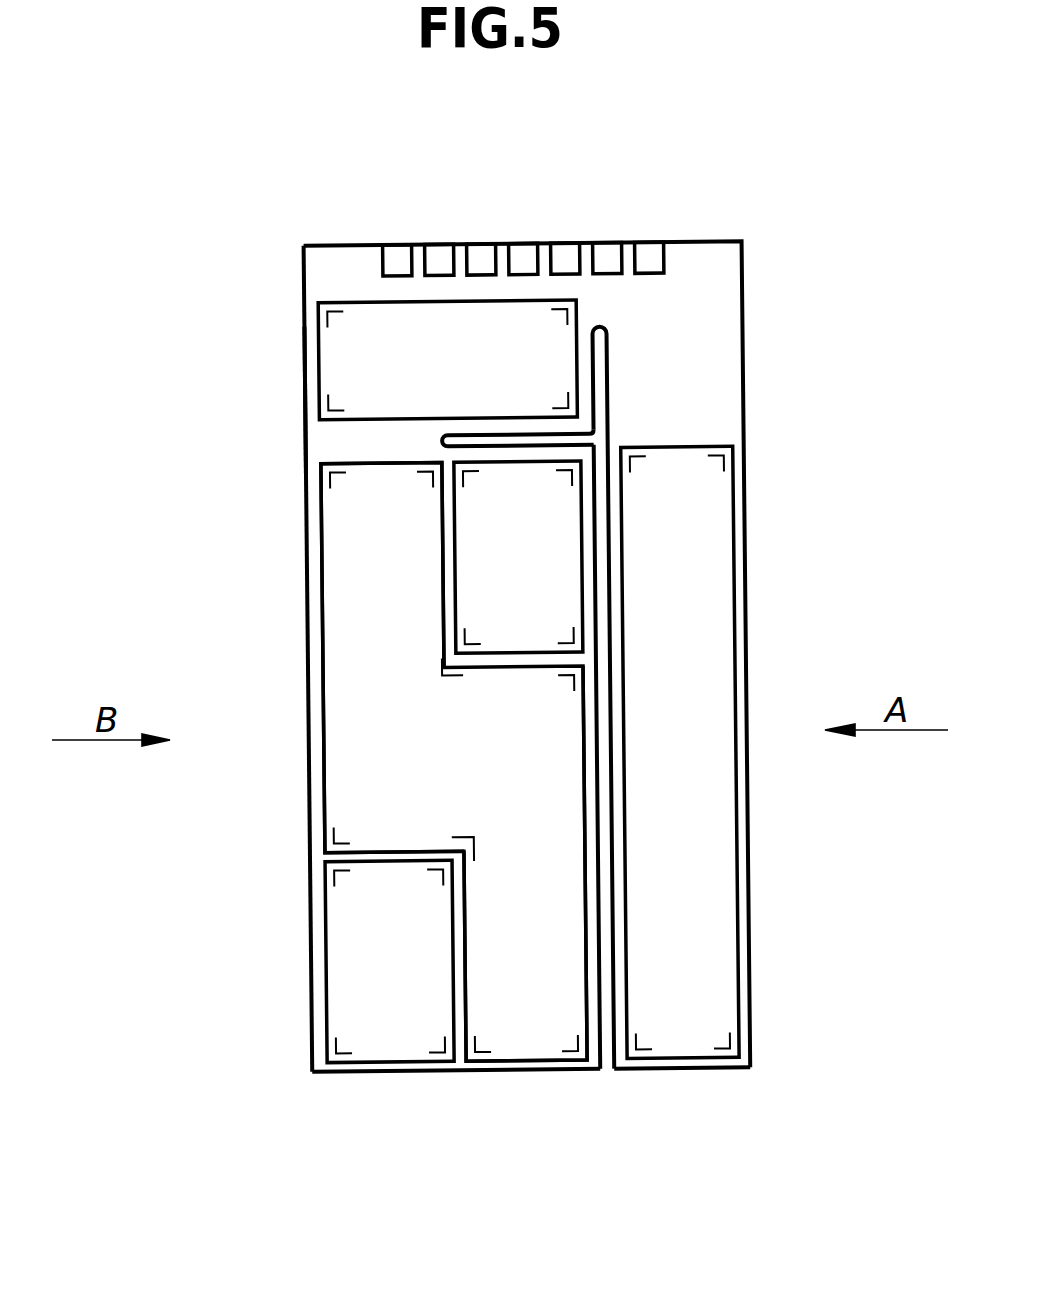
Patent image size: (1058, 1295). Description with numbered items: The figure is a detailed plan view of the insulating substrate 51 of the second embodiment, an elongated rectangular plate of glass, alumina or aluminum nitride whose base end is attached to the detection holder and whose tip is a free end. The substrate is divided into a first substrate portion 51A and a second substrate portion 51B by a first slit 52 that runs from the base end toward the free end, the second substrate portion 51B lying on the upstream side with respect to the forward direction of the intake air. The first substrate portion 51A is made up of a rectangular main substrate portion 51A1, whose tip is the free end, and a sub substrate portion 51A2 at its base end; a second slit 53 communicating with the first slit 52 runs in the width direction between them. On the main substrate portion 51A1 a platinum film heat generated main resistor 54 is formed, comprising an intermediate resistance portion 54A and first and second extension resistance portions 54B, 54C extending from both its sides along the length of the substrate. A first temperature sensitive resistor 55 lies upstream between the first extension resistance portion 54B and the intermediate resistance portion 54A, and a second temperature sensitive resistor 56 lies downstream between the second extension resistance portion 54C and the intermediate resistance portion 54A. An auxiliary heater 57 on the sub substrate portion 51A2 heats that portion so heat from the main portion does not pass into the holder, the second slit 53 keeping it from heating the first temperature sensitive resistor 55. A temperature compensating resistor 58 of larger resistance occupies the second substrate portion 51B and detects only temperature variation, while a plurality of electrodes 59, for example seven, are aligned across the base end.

The insulating substrate 51 is at (778, 222).
The first substrate portion 51A is at (310, 832).
The main substrate portion 51A1 is at (445, 1073).
The sub substrate portion 51A2 is at (310, 400).
The second substrate portion 51B is at (752, 1005).
The first slit 52 is at (609, 883).
The second slit 53 is at (555, 442).
The heat generated main resistor 54 is at (337, 645).
The intermediate resistance portion 54A is at (340, 767).
The first extension resistance portion 54B is at (337, 530).
The second extension resistance portion 54C is at (537, 1045).
The first temperature sensitive resistor 55 is at (565, 555).
The second temperature sensitive resistor 56 is at (337, 958).
The auxiliary heater 57 is at (335, 345).
The temperature compensating resistor 58 is at (720, 835).
The electrodes 59 is at (398, 249).